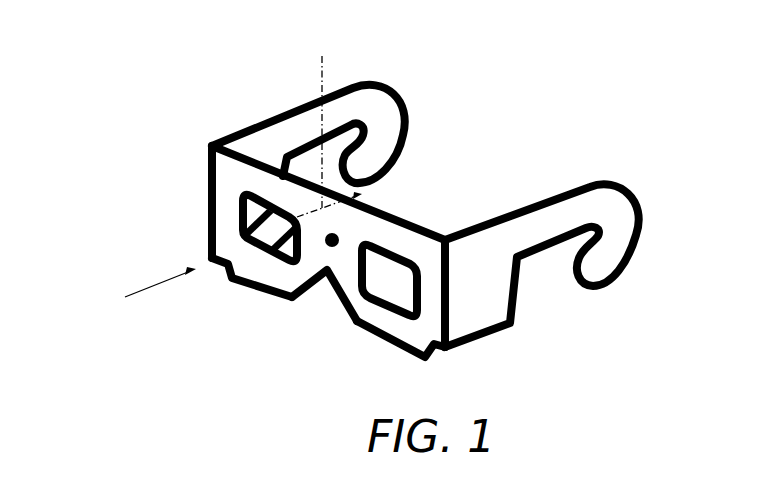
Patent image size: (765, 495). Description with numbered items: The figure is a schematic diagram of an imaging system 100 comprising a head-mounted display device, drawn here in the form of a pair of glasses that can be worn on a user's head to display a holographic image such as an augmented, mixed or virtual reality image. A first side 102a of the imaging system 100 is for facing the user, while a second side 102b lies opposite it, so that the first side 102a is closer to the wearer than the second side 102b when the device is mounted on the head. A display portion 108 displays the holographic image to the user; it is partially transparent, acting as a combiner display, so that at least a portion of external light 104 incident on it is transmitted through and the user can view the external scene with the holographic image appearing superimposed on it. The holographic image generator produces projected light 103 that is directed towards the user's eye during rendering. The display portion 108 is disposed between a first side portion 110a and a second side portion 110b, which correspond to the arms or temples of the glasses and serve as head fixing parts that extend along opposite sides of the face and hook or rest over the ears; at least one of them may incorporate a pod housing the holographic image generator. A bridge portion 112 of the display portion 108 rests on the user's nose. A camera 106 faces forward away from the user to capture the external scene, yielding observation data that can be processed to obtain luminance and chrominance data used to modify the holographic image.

The imaging system 100 is at (195, 68).
The first side 102a is at (458, 226).
The second side 102b is at (215, 288).
The projected light 103 is at (322, 120).
The external light 104 is at (141, 285).
The camera 106 is at (327, 254).
The display portion 108 is at (238, 221).
The first side portion 110a is at (308, 134).
The second side portion 110b is at (542, 265).
The bridge portion 112 is at (318, 291).